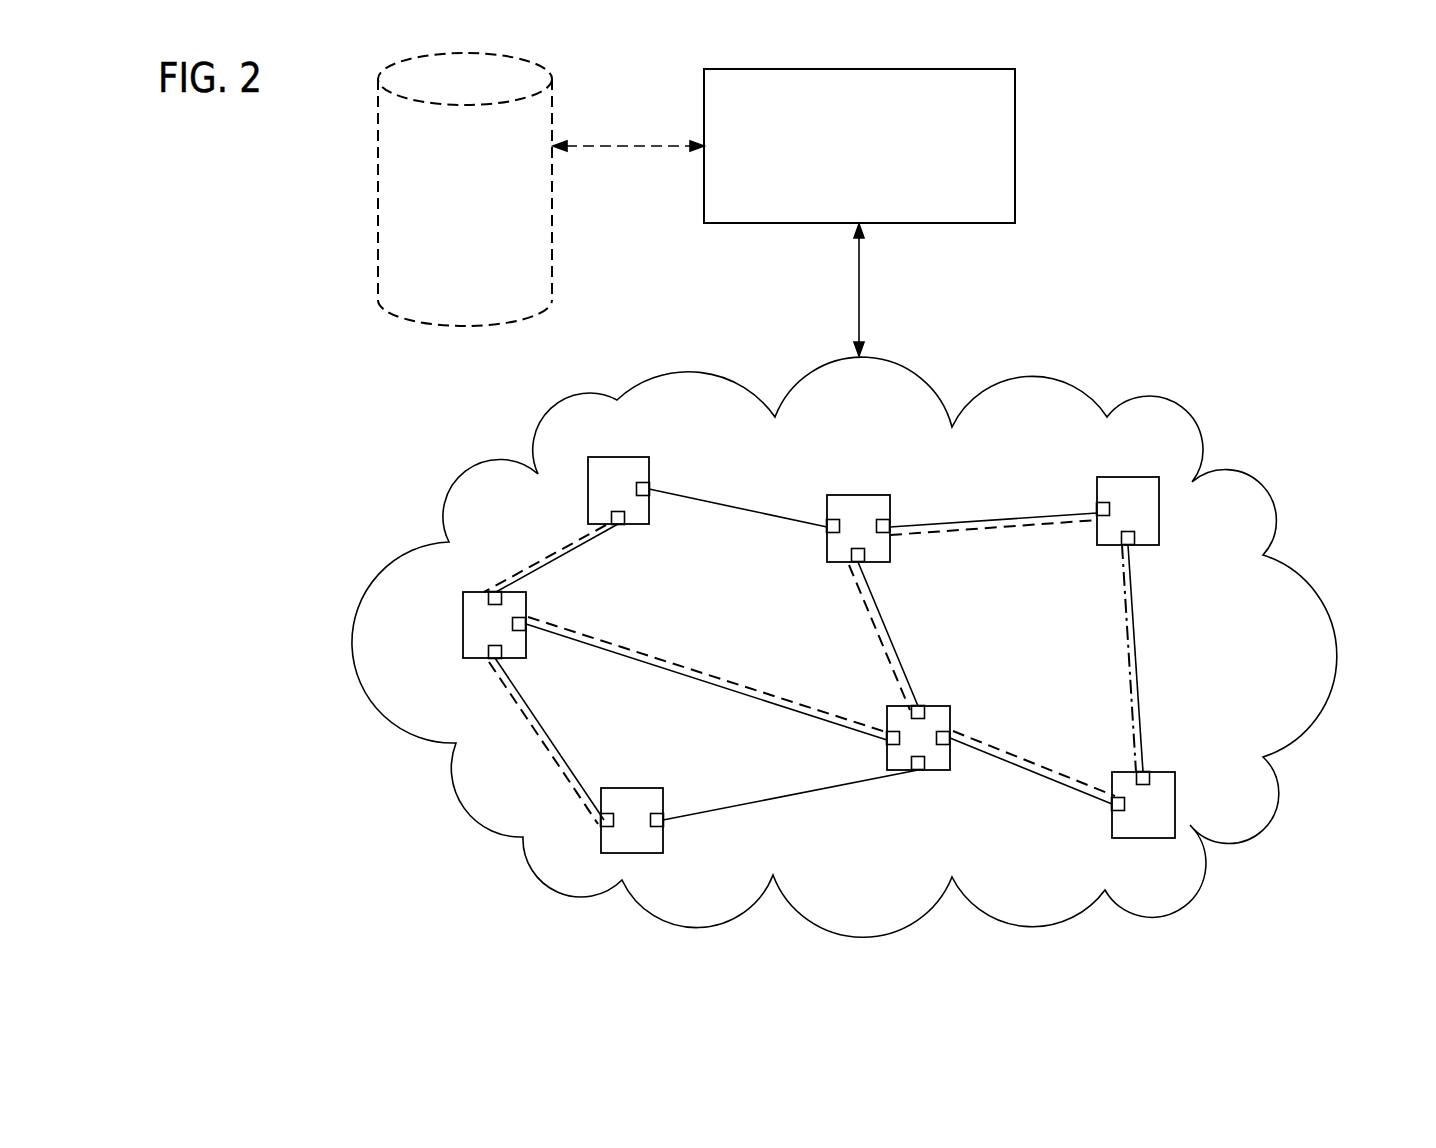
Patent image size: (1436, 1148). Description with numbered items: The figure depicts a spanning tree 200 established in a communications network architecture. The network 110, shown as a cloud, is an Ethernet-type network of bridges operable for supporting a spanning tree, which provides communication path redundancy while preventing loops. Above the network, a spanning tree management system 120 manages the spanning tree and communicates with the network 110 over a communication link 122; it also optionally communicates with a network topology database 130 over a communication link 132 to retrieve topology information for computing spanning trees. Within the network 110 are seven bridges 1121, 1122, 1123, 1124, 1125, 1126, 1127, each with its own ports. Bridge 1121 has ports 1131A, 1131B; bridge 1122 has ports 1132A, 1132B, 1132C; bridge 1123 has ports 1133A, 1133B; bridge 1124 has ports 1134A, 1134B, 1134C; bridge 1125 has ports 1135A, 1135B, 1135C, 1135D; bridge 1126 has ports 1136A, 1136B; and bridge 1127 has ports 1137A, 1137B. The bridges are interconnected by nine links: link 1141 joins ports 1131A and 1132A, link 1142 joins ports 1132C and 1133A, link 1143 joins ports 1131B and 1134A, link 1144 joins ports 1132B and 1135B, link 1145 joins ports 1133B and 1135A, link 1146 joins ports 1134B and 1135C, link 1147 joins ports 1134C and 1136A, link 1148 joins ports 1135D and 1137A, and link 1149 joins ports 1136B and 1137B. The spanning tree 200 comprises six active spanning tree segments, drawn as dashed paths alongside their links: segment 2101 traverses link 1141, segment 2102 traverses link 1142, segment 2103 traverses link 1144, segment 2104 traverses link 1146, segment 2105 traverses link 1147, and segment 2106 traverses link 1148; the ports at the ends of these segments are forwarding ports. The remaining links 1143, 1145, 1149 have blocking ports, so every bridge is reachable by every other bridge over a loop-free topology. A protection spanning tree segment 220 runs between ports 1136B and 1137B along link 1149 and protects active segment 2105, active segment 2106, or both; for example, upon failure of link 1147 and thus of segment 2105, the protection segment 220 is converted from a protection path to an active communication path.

The spanning tree 200 is at (197, 134).
The network 110 is at (1338, 645).
The spanning tree management system 120 is at (1015, 147).
The communication link 122 is at (860, 290).
The network topology database 130 is at (378, 190).
The communication link 132 is at (603, 148).
The protection spanning tree segment 220 is at (1127, 680).
The bridge 1121 is at (600, 457).
The bridge 1122 is at (463, 633).
The bridge 1123 is at (632, 855).
The bridge 1124 is at (837, 495).
The bridge 1125 is at (938, 705).
The bridge 1126 is at (1160, 507).
The bridge 1127 is at (1163, 773).
The port 1131A is at (624, 522).
The port 1131B is at (650, 488).
The port 1132A is at (502, 597).
The port 1132B is at (527, 632).
The port 1132C is at (492, 658).
The port 1133A is at (610, 818).
The port 1133B is at (665, 823).
The port 1134A is at (827, 530).
The port 1134B is at (854, 563).
The port 1134C is at (890, 527).
The port 1135A is at (922, 772).
The port 1135B is at (887, 740).
The port 1135C is at (912, 708).
The port 1135D is at (950, 735).
The port 1136A is at (1107, 514).
The port 1136B is at (1124, 546).
The port 1137A is at (1112, 808).
The port 1137B is at (1150, 780).
The link 1141 is at (570, 548).
The link 1142 is at (555, 747).
The link 1143 is at (735, 507).
The link 1144 is at (682, 676).
The link 1145 is at (800, 797).
The link 1146 is at (888, 616).
The link 1147 is at (977, 517).
The link 1148 is at (1032, 769).
The link 1149 is at (1141, 640).
The active spanning tree segment 2101 is at (568, 533).
The active spanning tree segment 2102 is at (543, 756).
The active spanning tree segment 2103 is at (702, 658).
The active spanning tree segment 2104 is at (884, 642).
The active spanning tree segment 2105 is at (992, 533).
The active spanning tree segment 2106 is at (1037, 767).